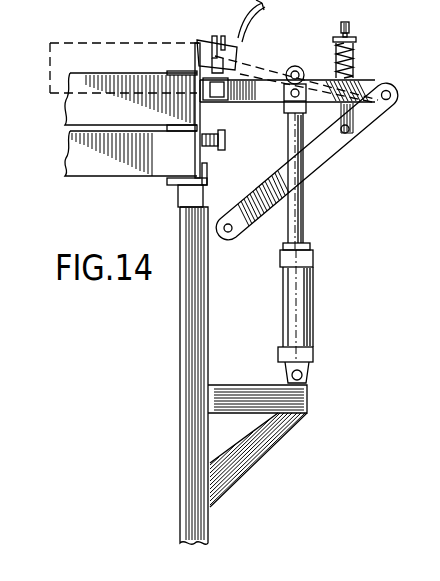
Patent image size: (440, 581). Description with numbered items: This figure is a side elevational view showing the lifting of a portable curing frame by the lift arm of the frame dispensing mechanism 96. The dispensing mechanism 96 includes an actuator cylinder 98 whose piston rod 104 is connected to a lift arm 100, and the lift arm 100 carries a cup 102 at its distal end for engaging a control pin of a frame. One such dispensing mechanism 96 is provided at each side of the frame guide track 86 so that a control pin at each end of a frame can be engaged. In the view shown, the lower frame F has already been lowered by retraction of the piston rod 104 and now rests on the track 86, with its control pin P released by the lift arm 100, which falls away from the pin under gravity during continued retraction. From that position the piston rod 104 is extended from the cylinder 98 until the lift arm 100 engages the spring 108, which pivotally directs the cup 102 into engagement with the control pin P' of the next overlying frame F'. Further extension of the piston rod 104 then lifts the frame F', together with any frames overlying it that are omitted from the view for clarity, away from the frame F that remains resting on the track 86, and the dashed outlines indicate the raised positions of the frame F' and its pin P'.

The frame guide track 86 is at (210, 182).
The frame dispensing mechanism 96 is at (357, 248).
The actuator cylinder 98 is at (312, 327).
The lift arm 100 is at (325, 150).
The cup 102 is at (213, 98).
The piston rod 104 is at (296, 208).
The spring 108 is at (352, 53).
The frame F is at (131, 143).
The next overlying frame F' is at (214, 51).
The control pin P is at (233, 140).
The control pin of next overlying frame P' is at (260, 44).